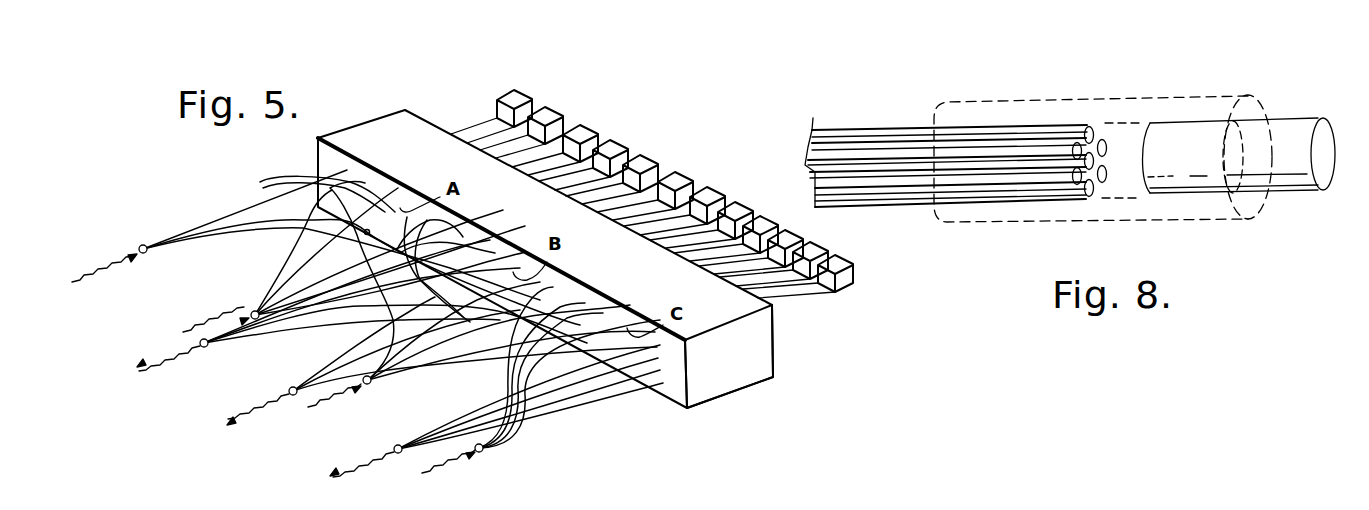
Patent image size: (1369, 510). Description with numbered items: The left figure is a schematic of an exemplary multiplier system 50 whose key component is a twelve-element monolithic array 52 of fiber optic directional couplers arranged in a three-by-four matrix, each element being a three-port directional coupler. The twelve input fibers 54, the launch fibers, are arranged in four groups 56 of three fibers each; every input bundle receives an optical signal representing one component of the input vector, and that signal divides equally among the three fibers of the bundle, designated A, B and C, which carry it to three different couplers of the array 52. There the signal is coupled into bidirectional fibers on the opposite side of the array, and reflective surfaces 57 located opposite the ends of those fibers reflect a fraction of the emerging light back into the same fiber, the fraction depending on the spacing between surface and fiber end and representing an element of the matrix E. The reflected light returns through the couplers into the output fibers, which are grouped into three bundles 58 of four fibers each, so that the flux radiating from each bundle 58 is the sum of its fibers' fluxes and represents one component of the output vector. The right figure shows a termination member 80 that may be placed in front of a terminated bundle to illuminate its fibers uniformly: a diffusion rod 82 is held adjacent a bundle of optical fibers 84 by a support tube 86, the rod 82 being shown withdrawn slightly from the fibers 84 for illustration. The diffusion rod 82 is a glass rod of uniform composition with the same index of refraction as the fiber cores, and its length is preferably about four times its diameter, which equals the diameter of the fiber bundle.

In FIG. 5, the multiplier system 50 is at (380, 105).
In FIG. 5, the monolithic array 52 is at (733, 367).
In FIG. 5, the input fibers 54 is at (252, 205).
In FIG. 5, the groups of three fibers 56 is at (149, 260).
In FIG. 5, the reflective surfaces 57 is at (497, 106).
In FIG. 5, the output fiber bundles 58 is at (292, 386).
In FIG. 8, the termination member 80 is at (1070, 155).
In FIG. 8, the diffusion rod 82 is at (1292, 140).
In FIG. 8, the bundle of optical fibers 84 is at (962, 192).
In FIG. 8, the support tube 86 is at (1048, 218).